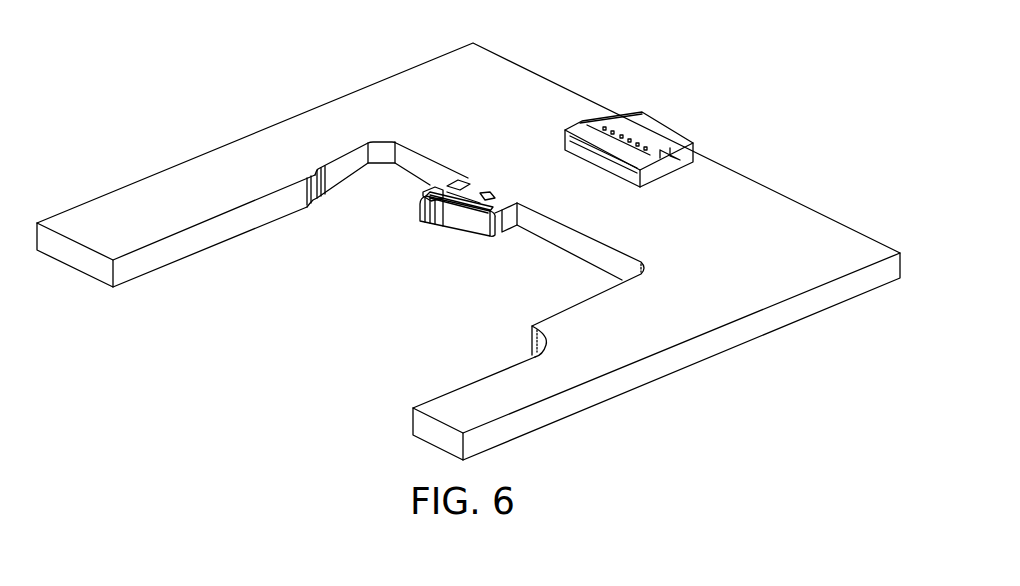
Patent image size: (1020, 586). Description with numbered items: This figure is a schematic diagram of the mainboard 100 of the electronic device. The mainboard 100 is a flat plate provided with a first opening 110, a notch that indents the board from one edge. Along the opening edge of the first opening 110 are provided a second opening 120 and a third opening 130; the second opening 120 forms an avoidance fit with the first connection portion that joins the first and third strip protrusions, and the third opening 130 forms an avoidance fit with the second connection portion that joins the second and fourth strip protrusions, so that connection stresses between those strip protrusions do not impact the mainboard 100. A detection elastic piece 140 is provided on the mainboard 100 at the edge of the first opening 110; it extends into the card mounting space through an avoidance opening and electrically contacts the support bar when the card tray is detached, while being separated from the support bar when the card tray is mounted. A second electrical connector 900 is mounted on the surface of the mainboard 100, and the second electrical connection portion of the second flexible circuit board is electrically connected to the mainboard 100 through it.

The mainboard 100 is at (260, 150).
The first opening 110 is at (227, 233).
The second opening 120 is at (353, 160).
The third opening 130 is at (480, 377).
The detection elastic piece 140 is at (460, 222).
The second electrical connector 900 is at (652, 127).